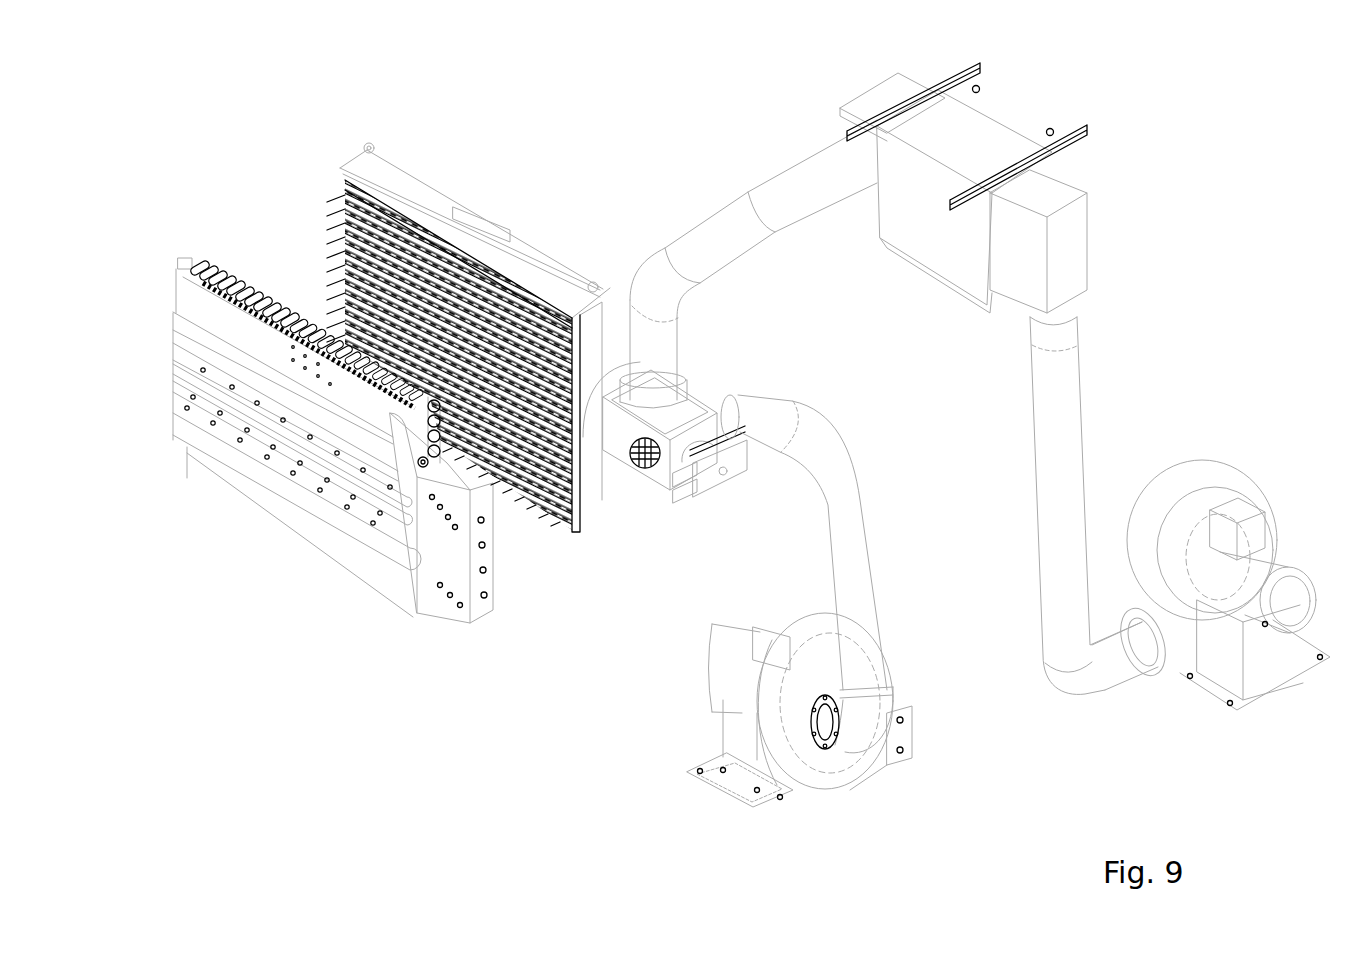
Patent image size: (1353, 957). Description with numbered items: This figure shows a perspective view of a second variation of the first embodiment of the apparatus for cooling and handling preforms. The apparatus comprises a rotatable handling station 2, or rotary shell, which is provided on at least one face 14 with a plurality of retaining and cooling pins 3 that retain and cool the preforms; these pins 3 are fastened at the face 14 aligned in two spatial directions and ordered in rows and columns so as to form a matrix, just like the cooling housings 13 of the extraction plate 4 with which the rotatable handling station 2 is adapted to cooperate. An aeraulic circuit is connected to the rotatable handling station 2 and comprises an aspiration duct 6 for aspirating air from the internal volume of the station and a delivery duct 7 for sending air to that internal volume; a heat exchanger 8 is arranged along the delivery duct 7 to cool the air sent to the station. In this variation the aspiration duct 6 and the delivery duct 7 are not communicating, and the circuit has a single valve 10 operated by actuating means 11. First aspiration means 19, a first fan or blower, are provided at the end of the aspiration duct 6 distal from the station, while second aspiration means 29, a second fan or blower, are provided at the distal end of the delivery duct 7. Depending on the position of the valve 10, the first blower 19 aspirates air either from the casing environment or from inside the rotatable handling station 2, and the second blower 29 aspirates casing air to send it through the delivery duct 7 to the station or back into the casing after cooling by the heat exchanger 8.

The rotatable handling station 2 is at (405, 173).
The retaining and cooling pins 3 is at (356, 282).
The extraction plate 4 is at (220, 303).
The aspiration duct 6 is at (845, 556).
The delivery duct 7 is at (715, 247).
The heat exchanger 8 is at (977, 150).
The valve 10 is at (617, 437).
The actuating means 11 is at (718, 477).
The cooling housings 13 is at (243, 287).
The face 14 is at (515, 283).
The first aspiration means 19 is at (815, 757).
The second aspiration means 29 is at (1225, 512).